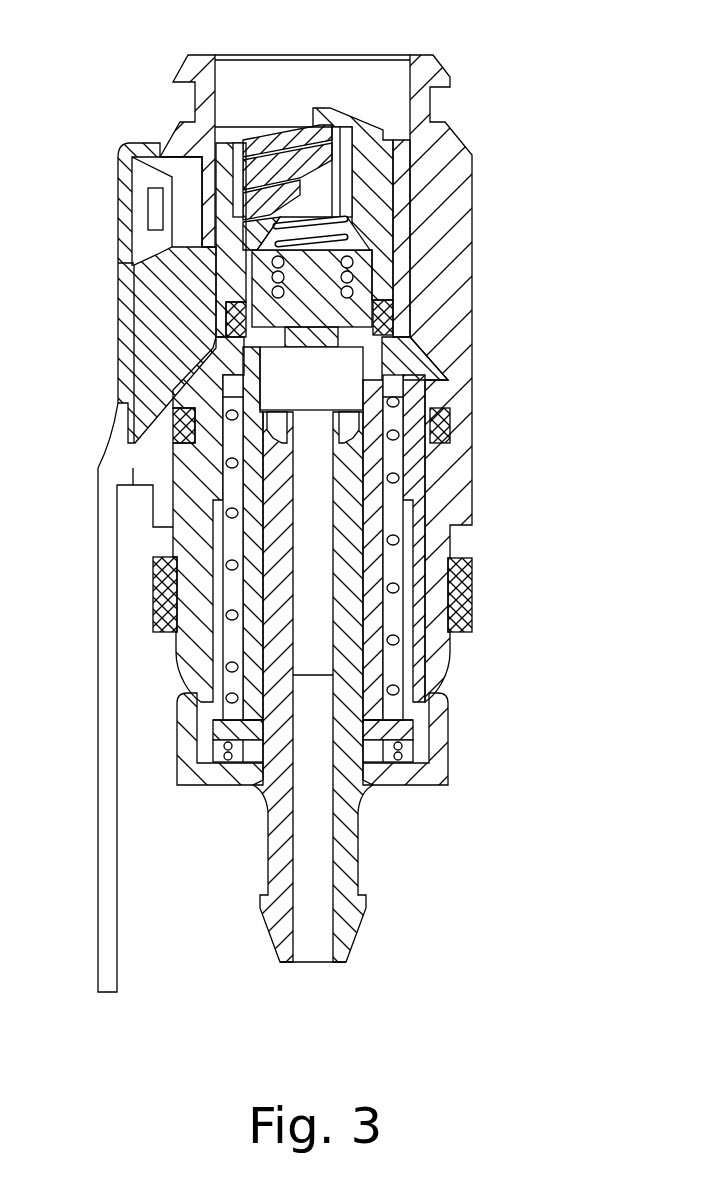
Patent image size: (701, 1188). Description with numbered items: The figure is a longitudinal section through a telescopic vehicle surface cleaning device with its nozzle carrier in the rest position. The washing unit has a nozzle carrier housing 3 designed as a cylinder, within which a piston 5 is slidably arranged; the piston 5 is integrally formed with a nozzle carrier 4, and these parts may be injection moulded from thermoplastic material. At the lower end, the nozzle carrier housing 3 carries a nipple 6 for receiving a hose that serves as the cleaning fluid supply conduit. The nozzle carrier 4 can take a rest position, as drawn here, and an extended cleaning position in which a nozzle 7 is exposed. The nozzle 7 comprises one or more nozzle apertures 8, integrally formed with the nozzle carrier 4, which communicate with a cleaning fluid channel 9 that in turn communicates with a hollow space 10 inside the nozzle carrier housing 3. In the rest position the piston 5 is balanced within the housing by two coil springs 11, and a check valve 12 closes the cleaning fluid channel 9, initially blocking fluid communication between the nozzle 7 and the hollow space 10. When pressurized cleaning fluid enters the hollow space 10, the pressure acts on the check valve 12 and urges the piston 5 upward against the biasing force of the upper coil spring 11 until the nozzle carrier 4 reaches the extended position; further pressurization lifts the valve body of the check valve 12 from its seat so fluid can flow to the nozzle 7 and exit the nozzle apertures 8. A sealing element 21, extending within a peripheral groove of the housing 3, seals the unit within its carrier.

The nozzle carrier housing 3 is at (430, 662).
The nozzle carrier 4 is at (365, 268).
The piston 5 is at (395, 558).
The nipple 6 is at (350, 872).
The nozzle 7 is at (383, 177).
The nozzle apertures 8 is at (243, 167).
The cleaning fluid channel 9 is at (307, 343).
The hollow space 10 is at (343, 373).
The coil springs 11 is at (399, 401).
The check valve 12 is at (302, 297).
The sealing element 21 is at (450, 427).